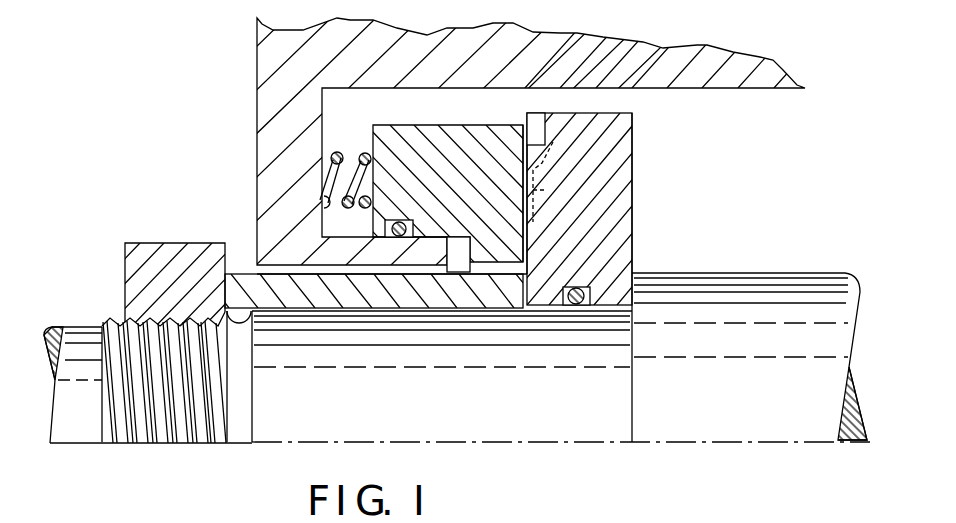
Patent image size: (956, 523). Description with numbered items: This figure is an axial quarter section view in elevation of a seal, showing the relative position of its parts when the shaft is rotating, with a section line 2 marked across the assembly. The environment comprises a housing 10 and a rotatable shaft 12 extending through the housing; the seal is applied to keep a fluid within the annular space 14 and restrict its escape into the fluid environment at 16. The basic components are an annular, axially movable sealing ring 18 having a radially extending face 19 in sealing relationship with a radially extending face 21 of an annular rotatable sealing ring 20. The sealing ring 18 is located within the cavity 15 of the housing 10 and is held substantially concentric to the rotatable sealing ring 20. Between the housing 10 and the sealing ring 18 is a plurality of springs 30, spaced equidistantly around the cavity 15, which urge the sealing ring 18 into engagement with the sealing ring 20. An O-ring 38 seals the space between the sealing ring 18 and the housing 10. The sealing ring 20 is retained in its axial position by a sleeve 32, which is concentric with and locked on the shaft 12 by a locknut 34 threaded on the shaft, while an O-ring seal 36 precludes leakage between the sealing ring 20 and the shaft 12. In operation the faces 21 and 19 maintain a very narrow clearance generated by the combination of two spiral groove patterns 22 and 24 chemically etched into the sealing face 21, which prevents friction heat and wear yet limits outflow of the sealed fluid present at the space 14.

The section line 2- 2 is at (522, 114).
The housing 10 is at (434, 141).
The rotatable shaft 12 is at (681, 272).
The annular space 14 is at (736, 196).
The cavity 15 is at (375, 121).
The fluid environment 16 is at (174, 200).
The sealing ring 18 is at (473, 186).
The radially extending face 19 is at (524, 236).
The rotatable sealing ring 20 is at (586, 267).
The radially extending face 21 is at (531, 243).
The spiral groove pattern 22 is at (544, 133).
The spiral groove pattern 24 is at (549, 198).
The springs 30 is at (360, 151).
The sleeve 32 is at (342, 308).
The locknut 34 is at (182, 290).
The O-ring seal 36 is at (577, 305).
The O-ring 38 is at (415, 222).